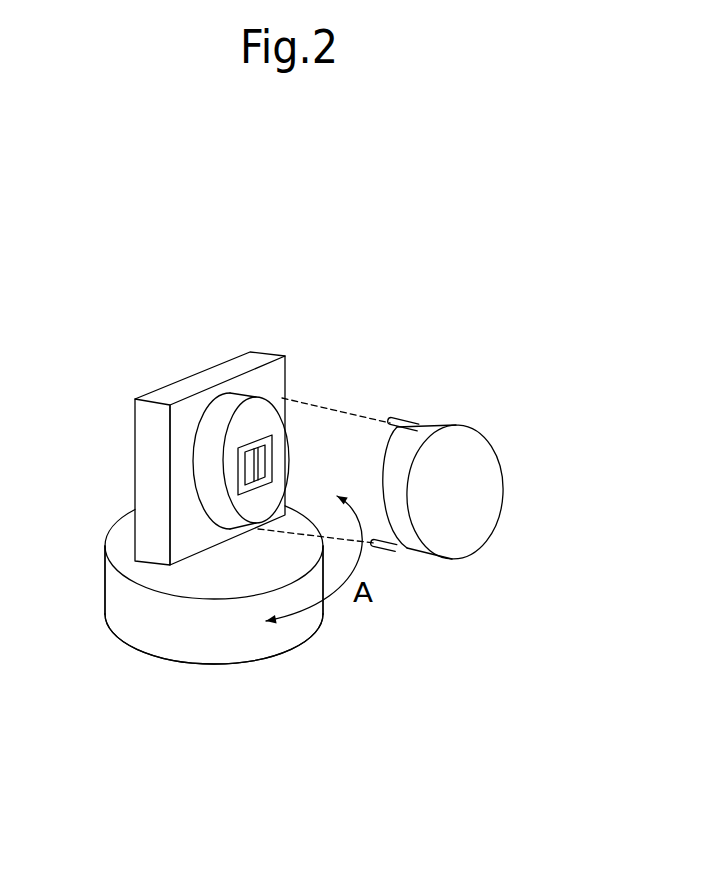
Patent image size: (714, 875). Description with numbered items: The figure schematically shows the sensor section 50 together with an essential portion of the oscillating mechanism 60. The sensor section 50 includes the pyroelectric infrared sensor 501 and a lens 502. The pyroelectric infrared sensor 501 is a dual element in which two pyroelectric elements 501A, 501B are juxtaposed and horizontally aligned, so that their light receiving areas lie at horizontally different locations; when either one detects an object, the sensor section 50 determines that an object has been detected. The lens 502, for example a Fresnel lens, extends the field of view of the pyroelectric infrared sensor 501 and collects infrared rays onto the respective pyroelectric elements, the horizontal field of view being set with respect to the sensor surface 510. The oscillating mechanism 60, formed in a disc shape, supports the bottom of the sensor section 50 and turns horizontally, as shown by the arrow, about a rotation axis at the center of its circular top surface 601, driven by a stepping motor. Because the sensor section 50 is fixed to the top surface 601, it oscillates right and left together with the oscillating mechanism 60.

The sensor section 50 is at (386, 337).
The pyroelectric infrared sensor 501 is at (203, 468).
The pyroelectric element 501A is at (248, 452).
The pyroelectric element 501B is at (267, 459).
The lens 502 is at (481, 434).
The sensor surface 510 is at (256, 502).
The oscillating mechanism 60 is at (302, 645).
The top surface 601 is at (185, 573).